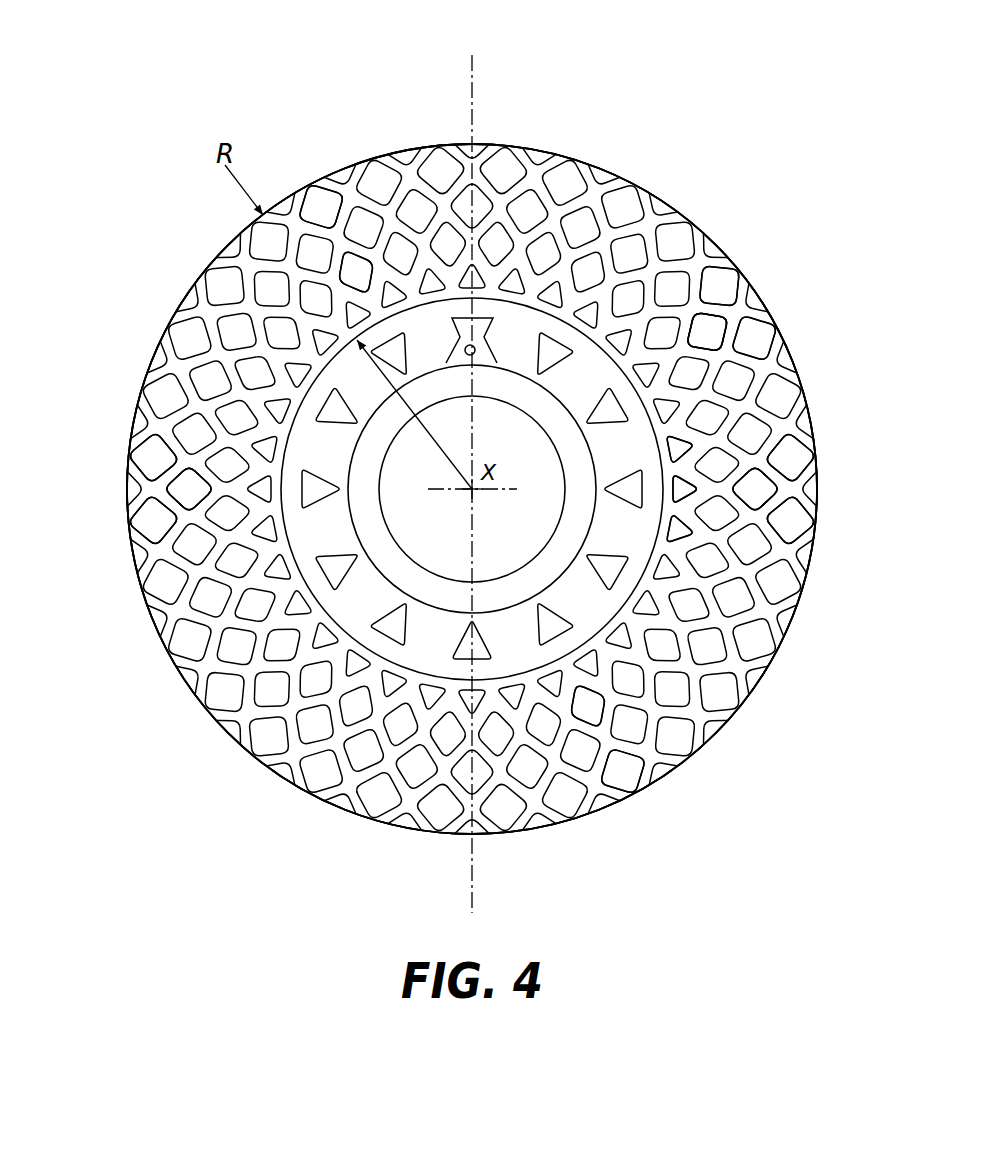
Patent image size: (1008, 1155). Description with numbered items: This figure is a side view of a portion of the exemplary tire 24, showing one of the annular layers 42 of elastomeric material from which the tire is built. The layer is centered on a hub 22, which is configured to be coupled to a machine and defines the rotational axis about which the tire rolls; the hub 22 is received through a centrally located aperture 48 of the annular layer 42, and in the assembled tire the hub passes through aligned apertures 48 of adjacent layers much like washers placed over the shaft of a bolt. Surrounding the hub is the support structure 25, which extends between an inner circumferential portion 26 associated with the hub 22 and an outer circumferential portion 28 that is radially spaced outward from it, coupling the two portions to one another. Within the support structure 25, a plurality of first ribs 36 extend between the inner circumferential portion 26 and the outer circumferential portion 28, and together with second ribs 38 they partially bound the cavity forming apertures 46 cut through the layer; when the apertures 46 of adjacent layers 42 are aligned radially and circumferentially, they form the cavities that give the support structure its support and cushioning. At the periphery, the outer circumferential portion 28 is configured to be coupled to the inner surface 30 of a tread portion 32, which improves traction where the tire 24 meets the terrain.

The hub 22 is at (582, 590).
The tire 24 is at (795, 177).
The support structure 25 is at (712, 300).
The inner circumferential portion 26 is at (632, 373).
The outer circumferential portion 28 is at (595, 170).
The inner surface 30 is at (548, 125).
The tread portion 32 is at (680, 488).
The first ribs 36 is at (735, 330).
The second ribs 38 is at (173, 472).
The layers 42 is at (788, 654).
The cavity forming apertures 46 is at (363, 267).
The centrally located aperture 48 is at (443, 300).